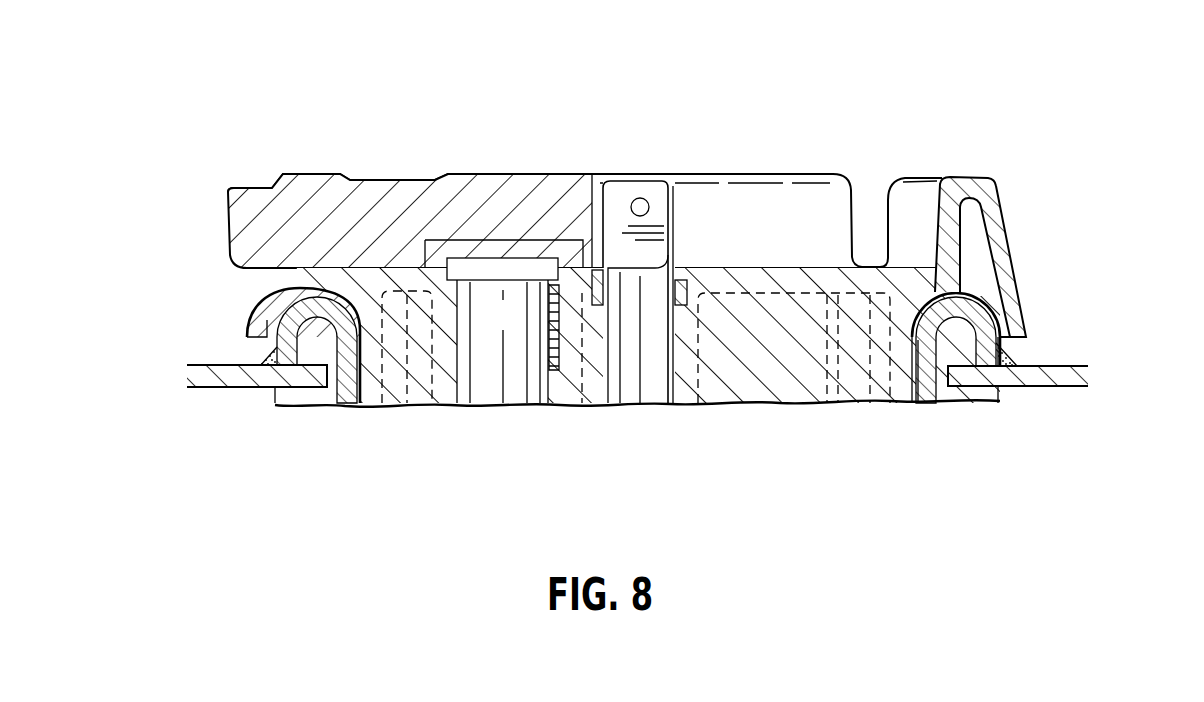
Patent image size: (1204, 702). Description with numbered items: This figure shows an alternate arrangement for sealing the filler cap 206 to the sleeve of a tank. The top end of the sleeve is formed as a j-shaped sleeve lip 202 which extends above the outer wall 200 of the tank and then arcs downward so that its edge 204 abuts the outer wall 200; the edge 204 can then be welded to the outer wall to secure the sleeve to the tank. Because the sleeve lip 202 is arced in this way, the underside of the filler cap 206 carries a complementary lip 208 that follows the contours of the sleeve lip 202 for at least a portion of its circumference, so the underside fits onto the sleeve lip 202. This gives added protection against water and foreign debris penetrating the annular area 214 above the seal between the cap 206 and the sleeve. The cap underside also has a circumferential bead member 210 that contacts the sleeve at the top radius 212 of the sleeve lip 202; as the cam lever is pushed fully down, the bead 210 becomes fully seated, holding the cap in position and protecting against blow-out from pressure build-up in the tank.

The outer wall 200 is at (1050, 366).
The sleeve lip 202 is at (300, 313).
The edge 204 is at (997, 372).
The filler cap 206 is at (509, 140).
The complementary lip 208 is at (268, 305).
The bead member 210 is at (305, 293).
The top radius 212 is at (962, 300).
The annular area 214 is at (920, 372).